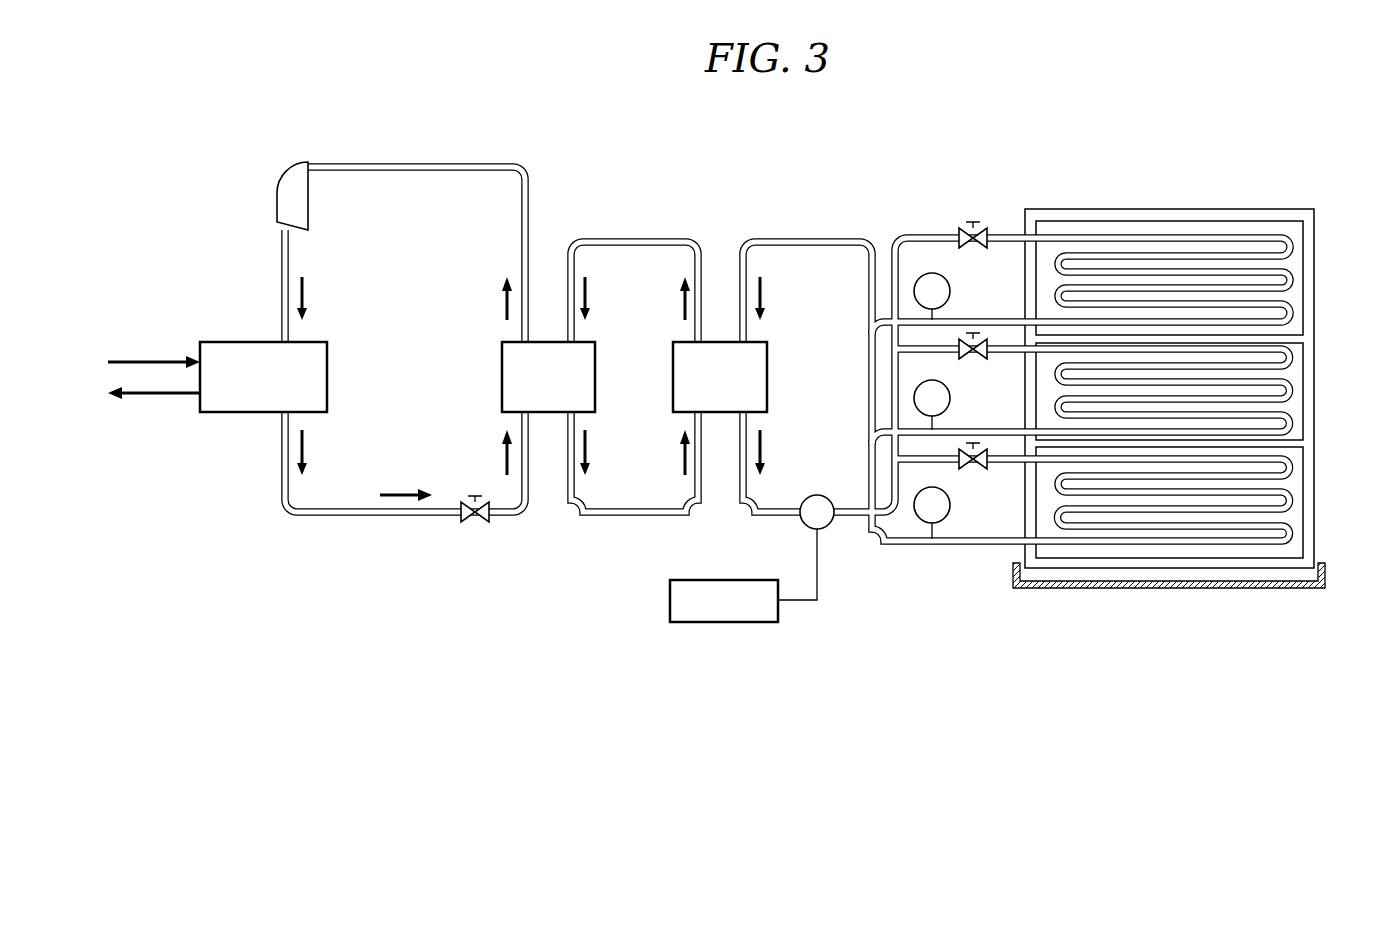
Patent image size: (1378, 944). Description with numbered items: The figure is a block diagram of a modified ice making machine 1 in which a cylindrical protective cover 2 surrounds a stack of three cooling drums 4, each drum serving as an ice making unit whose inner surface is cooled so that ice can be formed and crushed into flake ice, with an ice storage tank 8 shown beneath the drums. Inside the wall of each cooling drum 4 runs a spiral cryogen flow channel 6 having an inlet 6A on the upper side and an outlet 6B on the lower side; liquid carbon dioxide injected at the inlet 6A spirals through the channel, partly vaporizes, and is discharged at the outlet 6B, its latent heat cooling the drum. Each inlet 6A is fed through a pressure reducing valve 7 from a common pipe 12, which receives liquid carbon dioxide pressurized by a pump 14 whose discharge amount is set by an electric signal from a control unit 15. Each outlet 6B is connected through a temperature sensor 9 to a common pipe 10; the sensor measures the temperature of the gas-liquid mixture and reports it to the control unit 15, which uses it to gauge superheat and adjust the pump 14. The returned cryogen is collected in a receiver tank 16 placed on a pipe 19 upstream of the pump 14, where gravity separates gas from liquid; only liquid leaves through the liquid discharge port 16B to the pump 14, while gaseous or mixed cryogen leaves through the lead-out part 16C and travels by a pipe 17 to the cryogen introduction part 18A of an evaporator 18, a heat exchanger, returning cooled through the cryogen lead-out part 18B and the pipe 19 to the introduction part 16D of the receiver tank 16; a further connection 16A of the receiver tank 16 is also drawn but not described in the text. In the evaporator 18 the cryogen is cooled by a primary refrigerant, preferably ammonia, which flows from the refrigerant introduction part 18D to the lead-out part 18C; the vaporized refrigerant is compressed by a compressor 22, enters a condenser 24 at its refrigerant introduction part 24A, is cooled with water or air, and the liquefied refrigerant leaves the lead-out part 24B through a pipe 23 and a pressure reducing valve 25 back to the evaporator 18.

The ice making machine 1 is at (1255, 180).
The protective cover 2 is at (1314, 234).
The cooling drum 4 is at (1305, 290).
The cryogen flow channel 6 is at (1163, 235).
The inlet 6A is at (1003, 235).
The outlet 6B is at (1005, 320).
The pressure reducing valve 7 is at (972, 226).
The ice storage tank 8 is at (1326, 580).
The temperature sensor 9 is at (931, 273).
The pipe 10 is at (812, 240).
The pipe 12 is at (850, 516).
The pump 14 is at (828, 528).
The control unit 15 is at (716, 623).
The receiver tank 16 is at (760, 374).
The heat exchanger inlet pipe 16A is at (748, 342).
The liquid discharge port 16B is at (748, 415).
The lead-out part 16C is at (693, 340).
The introduction part 16D is at (693, 415).
The pipe 17 is at (626, 240).
The evaporator 18 is at (586, 374).
The cryogen introduction part 18A is at (576, 342).
The cryogen lead-out part 18B is at (578, 415).
The lead-out part 18C is at (520, 341).
The refrigerant introduction part 18D is at (520, 415).
The pipe 19 is at (643, 516).
The compressor 22 is at (288, 178).
The pipe 23 is at (345, 516).
The condenser 24 is at (318, 377).
The refrigerant introduction part 24A is at (292, 342).
The lead-out part 24B is at (290, 415).
The pressure reducing valve 25 is at (475, 520).